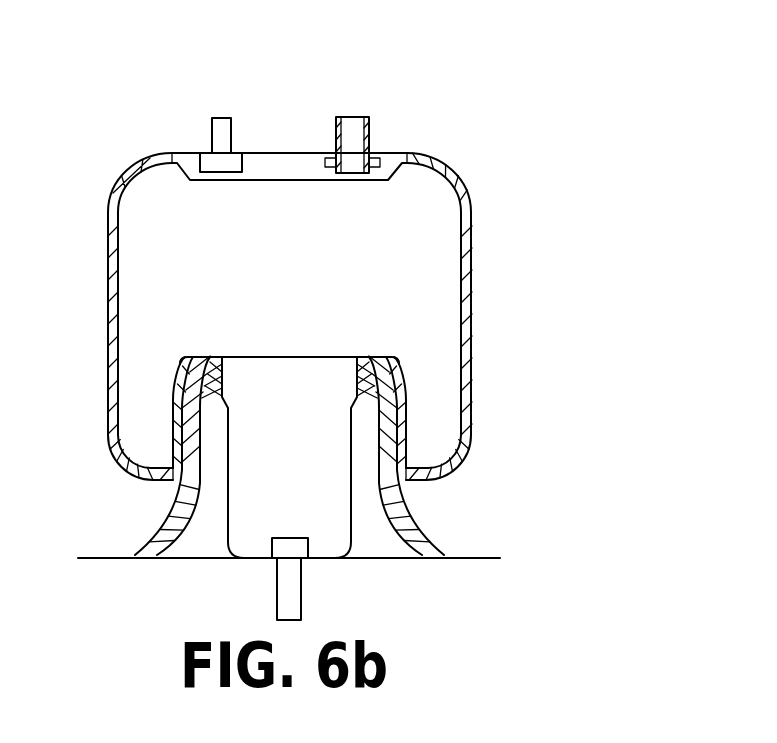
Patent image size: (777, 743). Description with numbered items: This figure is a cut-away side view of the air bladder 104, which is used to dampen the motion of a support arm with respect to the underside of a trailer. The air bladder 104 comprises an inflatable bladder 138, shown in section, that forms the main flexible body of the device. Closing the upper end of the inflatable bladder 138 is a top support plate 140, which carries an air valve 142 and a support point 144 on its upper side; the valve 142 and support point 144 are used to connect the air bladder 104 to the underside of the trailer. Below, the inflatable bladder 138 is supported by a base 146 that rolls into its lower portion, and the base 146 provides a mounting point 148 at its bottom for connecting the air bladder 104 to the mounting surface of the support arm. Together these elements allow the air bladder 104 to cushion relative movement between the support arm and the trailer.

The air bladder 104 is at (472, 300).
The inflatable bladder 138 is at (428, 212).
The top support plate 140 is at (289, 153).
The air valve 142 is at (352, 117).
The support point 144 is at (220, 118).
The base 146 is at (415, 528).
The mounting point 148 is at (302, 587).